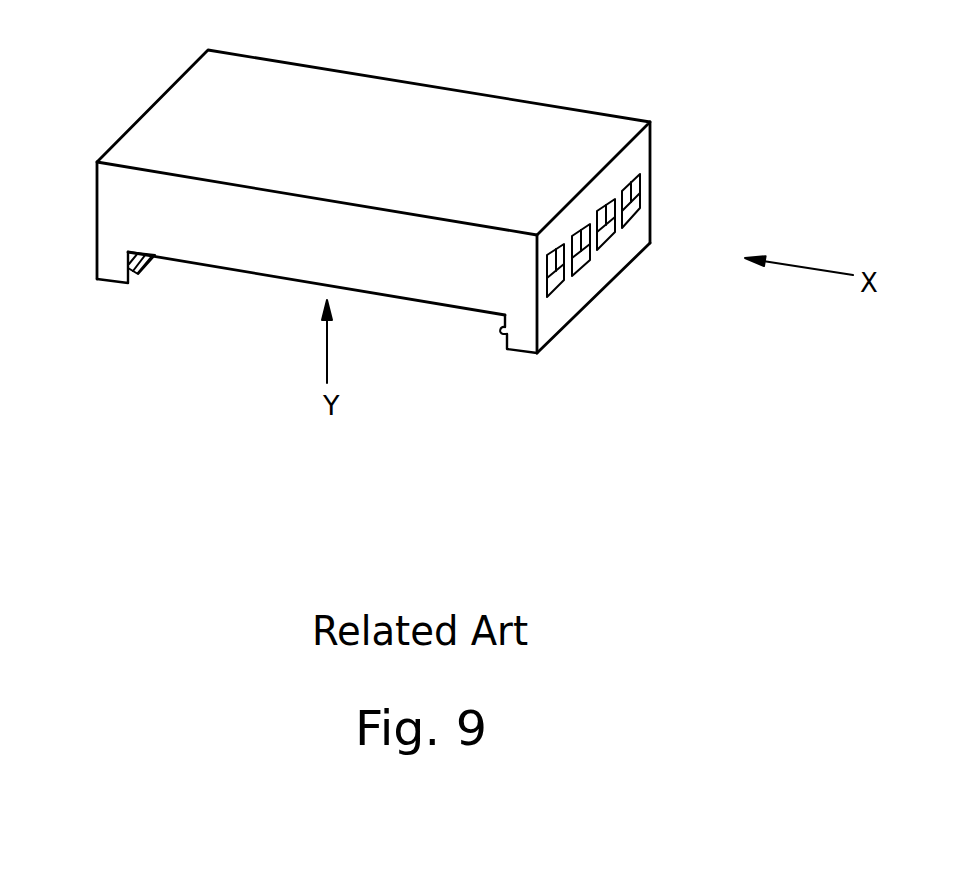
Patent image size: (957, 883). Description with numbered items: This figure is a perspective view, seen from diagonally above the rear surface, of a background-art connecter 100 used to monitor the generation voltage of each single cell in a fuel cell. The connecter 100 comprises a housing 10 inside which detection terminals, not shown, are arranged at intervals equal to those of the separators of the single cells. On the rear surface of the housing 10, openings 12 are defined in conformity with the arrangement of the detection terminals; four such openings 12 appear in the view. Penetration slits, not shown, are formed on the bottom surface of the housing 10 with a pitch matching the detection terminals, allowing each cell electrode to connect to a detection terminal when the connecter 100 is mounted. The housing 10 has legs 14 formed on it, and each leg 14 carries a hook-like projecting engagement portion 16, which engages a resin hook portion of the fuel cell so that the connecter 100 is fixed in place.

The connecter 100 is at (373, 525).
The housing 10 is at (191, 83).
The openings 12 is at (640, 200).
The legs 14 is at (104, 271).
The engagement portion 16 is at (140, 276).